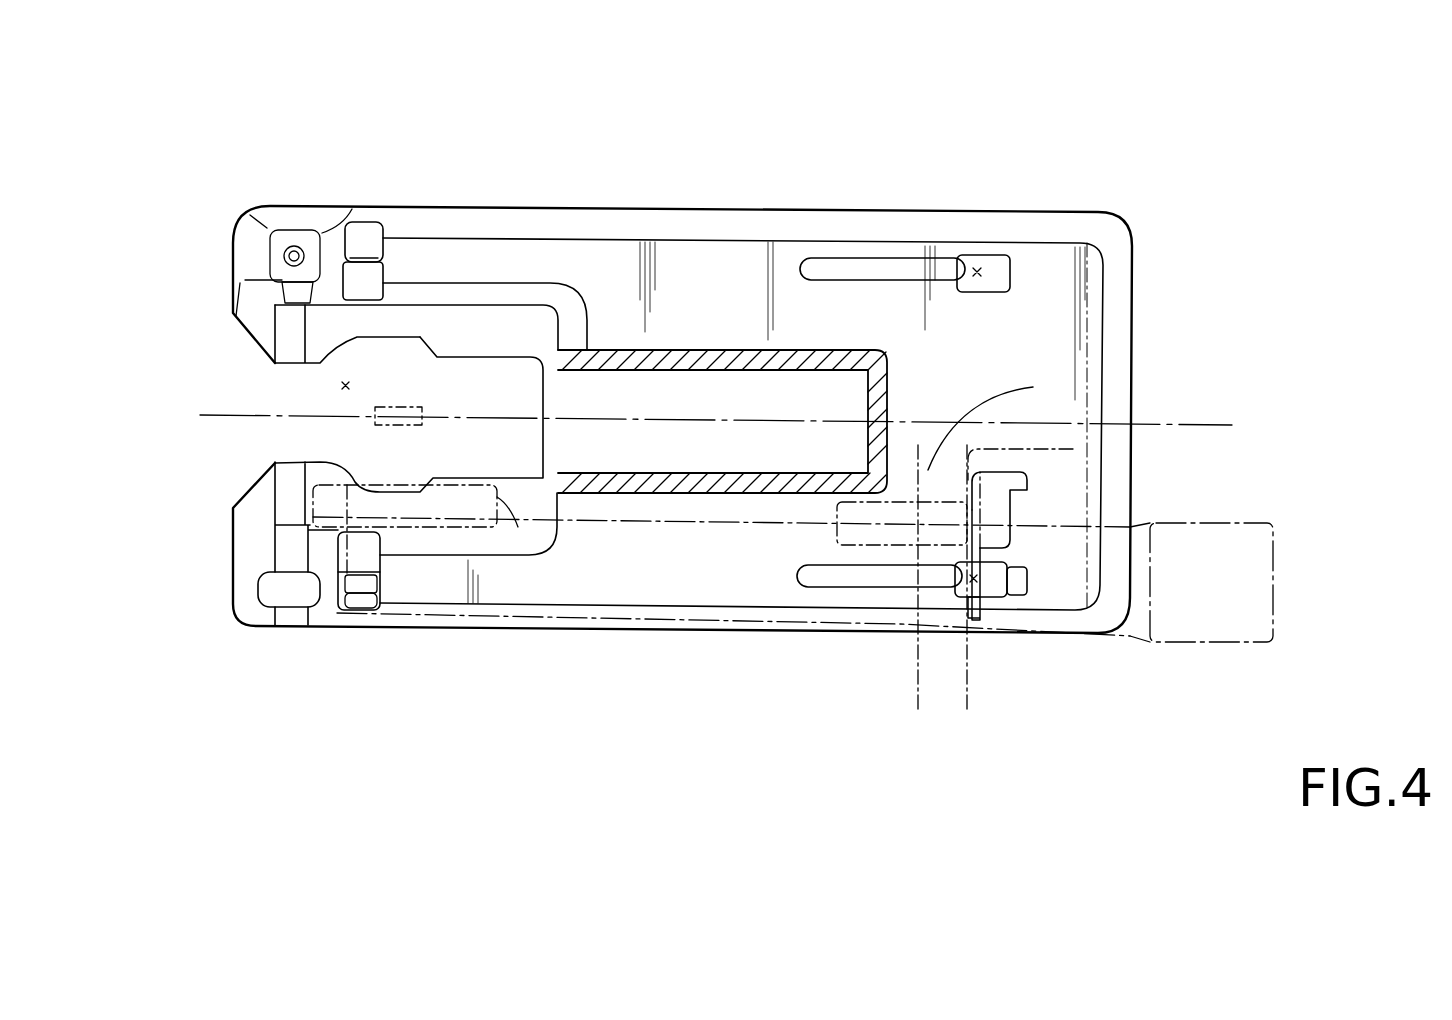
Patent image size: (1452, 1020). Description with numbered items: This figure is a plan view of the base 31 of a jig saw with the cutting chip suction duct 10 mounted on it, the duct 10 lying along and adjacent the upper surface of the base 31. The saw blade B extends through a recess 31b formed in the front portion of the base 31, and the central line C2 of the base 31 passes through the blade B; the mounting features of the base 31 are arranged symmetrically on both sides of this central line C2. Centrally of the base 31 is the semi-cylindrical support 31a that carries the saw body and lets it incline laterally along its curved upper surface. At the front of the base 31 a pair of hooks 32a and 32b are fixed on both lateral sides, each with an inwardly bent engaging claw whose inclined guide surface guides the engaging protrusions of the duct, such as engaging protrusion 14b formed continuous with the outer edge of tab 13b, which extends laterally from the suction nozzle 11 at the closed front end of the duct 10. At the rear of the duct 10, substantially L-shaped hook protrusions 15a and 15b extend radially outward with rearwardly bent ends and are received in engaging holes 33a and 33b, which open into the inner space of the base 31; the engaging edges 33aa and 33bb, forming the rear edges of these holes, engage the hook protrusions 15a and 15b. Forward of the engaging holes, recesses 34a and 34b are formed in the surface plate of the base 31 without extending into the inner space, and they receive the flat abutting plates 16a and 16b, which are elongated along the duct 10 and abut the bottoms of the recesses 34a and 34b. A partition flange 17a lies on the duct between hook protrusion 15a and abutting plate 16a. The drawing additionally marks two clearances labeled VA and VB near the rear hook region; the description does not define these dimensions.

The cutting chip suction duct 10 is at (634, 620).
The suction nozzle 11 is at (518, 528).
The tab 13b is at (360, 515).
The engaging protrusion 14b is at (345, 588).
The hook protrusion 15a is at (1027, 480).
The hook protrusion 15b is at (1007, 597).
The abutting plate 16a is at (1033, 387).
The abutting plate 16b is at (875, 548).
The partition flange 17a is at (1073, 449).
The base 31 is at (694, 183).
The support 31a is at (647, 350).
The recess 31b is at (337, 387).
The hook 32a is at (366, 235).
The hook 32b is at (360, 608).
The engaging hole 33a is at (970, 267).
The engaging edge 33aa is at (1000, 265).
The engaging hole 33b is at (992, 598).
The engaging edge 33bb is at (1027, 567).
The recess 34a is at (862, 267).
The recess 34b is at (820, 580).
The central line C2 is at (208, 413).
The saw blade B is at (403, 408).
The clearance A VA is at (910, 706).
The clearance B VB is at (959, 706).